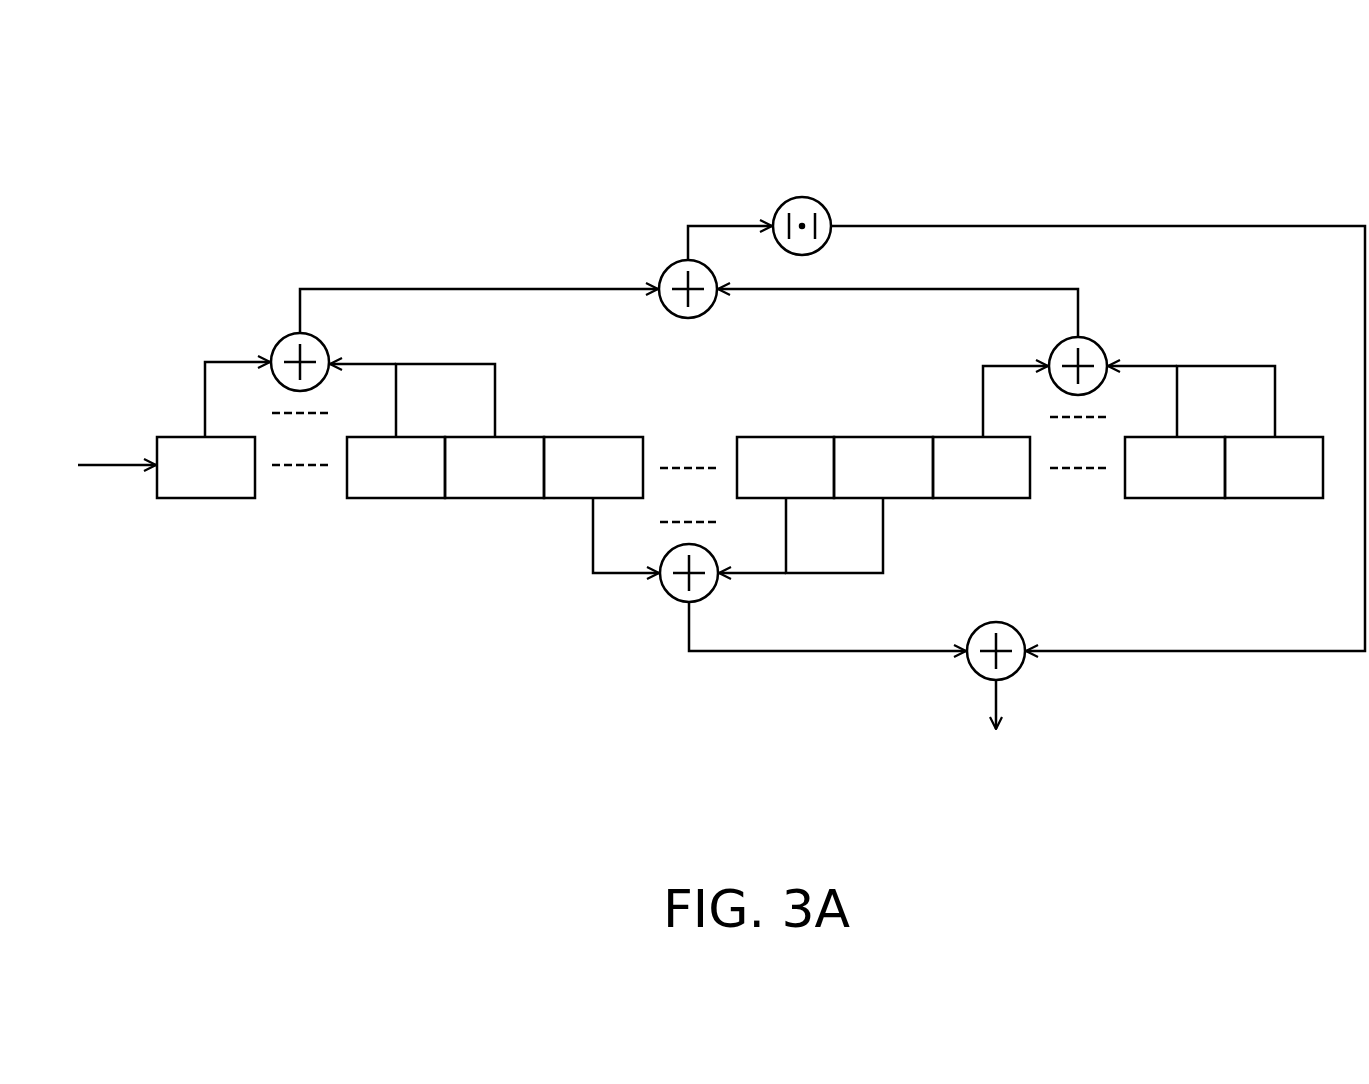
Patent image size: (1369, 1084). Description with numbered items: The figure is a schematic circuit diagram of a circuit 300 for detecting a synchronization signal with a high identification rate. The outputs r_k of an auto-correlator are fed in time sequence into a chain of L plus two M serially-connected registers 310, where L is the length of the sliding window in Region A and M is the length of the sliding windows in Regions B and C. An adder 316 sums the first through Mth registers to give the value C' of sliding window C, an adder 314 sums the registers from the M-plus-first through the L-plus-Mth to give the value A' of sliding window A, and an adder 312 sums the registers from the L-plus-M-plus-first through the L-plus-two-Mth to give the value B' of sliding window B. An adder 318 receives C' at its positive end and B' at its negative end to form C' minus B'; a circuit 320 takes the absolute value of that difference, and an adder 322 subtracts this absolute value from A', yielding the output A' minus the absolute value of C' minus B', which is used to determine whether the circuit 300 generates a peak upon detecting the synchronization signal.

The circuit 300 is at (1192, 156).
The serially-connected registers 310 is at (157, 413).
The adder 312 is at (1058, 345).
The adder 314 is at (672, 597).
The adder 316 is at (283, 338).
The adder 318 is at (670, 266).
The circuit 320 is at (785, 202).
The adder 322 is at (979, 626).